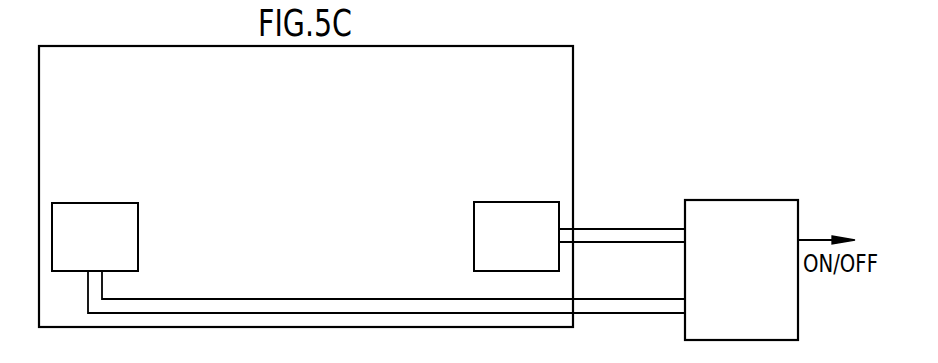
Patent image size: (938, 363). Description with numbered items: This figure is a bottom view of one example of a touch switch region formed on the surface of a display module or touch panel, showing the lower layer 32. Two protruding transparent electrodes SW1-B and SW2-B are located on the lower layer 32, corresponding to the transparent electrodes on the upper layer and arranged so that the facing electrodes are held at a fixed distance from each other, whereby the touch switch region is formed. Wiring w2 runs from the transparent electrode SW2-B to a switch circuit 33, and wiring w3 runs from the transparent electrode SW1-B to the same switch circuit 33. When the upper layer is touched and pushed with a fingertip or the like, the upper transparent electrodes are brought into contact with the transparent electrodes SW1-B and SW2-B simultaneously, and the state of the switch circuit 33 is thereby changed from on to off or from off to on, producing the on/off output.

The lower layer 32 is at (573, 125).
The switch circuit 33 is at (740, 200).
The wire w2 is at (622, 217).
The wire w3 is at (386, 288).
The transparent electrode SW1-B is at (95, 237).
The transparent electrode SW2-B is at (516, 236).